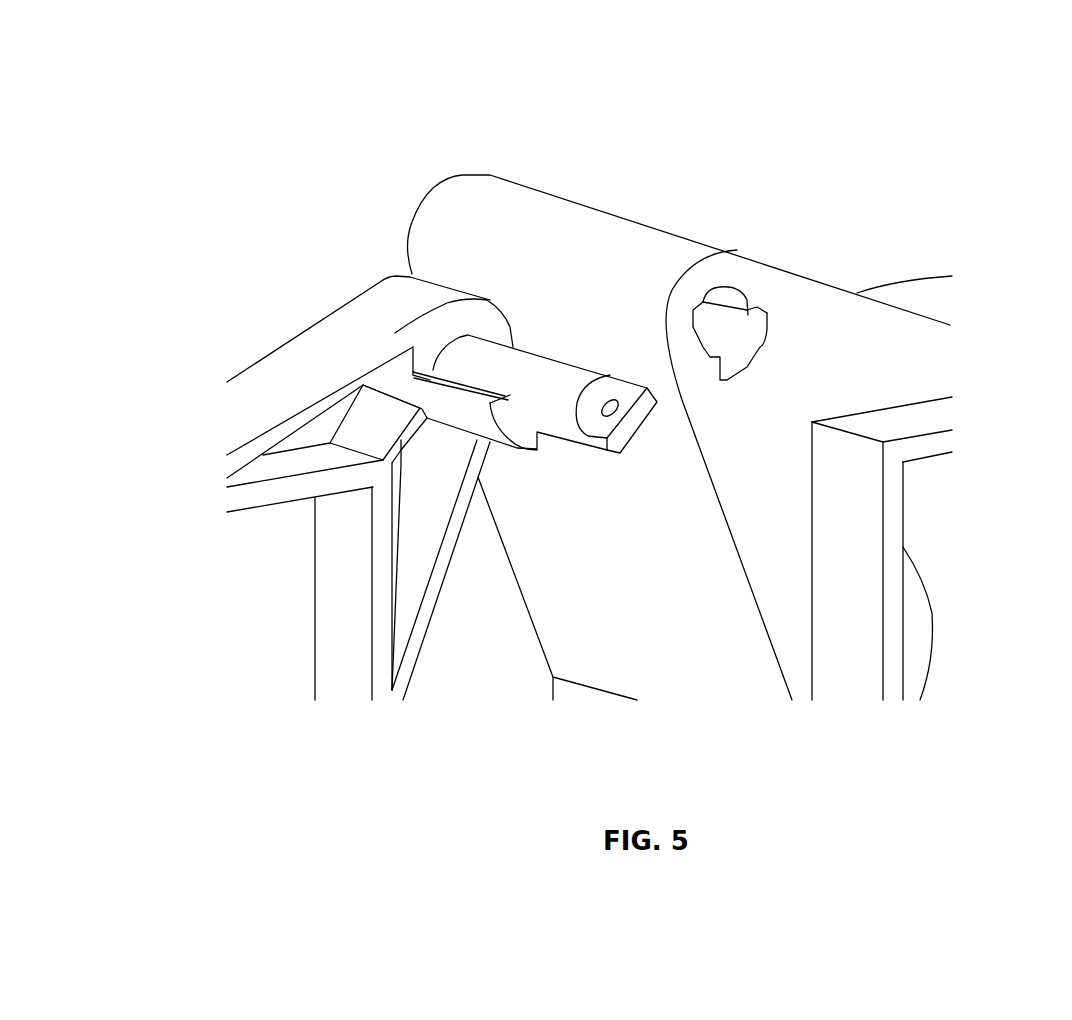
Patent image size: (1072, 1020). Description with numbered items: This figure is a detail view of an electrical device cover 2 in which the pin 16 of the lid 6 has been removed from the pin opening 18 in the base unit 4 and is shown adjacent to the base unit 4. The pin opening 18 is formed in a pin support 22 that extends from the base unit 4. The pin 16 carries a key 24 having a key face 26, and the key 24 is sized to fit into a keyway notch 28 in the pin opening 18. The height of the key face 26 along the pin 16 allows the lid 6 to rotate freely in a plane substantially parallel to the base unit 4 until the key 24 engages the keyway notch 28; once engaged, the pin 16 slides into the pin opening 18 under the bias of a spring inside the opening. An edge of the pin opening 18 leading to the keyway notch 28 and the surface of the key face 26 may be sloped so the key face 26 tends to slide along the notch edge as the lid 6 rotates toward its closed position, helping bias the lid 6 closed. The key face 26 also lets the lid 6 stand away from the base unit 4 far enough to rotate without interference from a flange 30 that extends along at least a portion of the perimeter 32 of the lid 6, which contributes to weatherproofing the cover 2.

The electrical device cover 2 is at (312, 156).
The base unit 4 is at (863, 540).
The lid 6 is at (277, 365).
The pin 16 is at (565, 378).
The pin opening 18 is at (715, 325).
The pin support 22 is at (815, 352).
The key 24 is at (452, 402).
The key face 26 is at (500, 413).
The keyway notch 28 is at (740, 352).
The flange 30 is at (352, 665).
The perimeter 32 is at (315, 602).